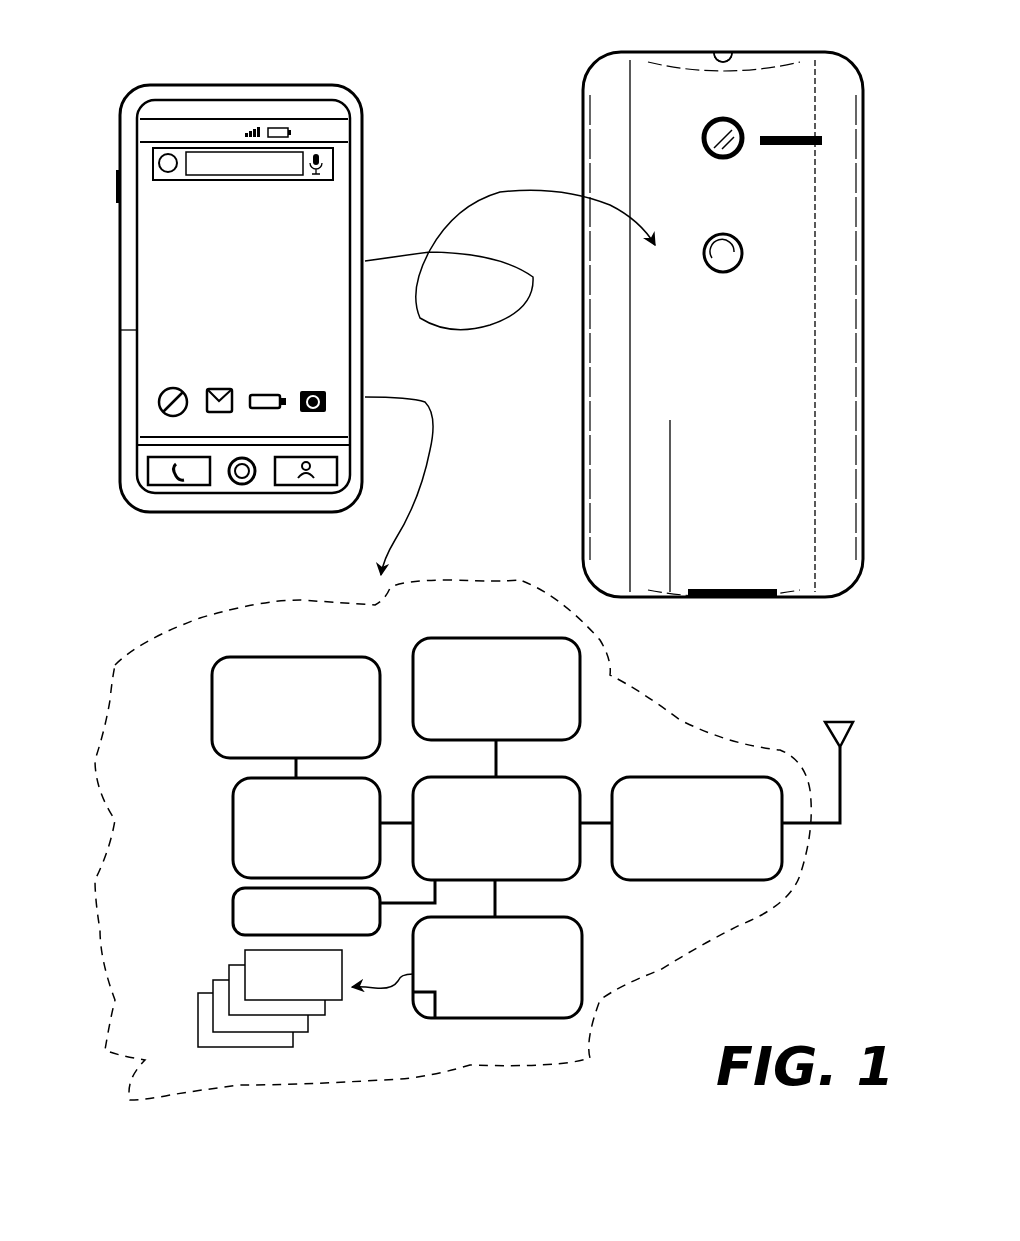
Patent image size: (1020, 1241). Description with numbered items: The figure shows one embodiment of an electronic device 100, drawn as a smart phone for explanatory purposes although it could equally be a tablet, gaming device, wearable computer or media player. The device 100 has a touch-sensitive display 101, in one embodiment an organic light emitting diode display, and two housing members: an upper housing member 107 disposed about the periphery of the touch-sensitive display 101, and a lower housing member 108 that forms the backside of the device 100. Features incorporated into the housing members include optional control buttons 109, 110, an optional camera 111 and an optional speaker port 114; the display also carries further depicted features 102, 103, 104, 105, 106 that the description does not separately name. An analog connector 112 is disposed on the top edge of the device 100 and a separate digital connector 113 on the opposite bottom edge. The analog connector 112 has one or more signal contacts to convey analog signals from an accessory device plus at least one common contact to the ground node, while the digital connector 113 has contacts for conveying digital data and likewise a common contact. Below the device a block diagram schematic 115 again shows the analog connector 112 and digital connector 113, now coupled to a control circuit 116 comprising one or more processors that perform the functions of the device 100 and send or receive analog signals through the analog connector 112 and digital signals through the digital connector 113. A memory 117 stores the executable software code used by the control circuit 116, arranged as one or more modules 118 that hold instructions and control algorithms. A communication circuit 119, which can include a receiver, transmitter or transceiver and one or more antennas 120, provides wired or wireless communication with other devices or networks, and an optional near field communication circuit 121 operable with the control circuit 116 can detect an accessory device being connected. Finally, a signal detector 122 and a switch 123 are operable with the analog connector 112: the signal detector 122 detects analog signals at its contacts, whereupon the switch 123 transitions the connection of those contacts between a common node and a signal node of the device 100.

The electronic device 100 is at (380, 165).
The touch-sensitive display 101 is at (355, 260).
The phone button 102 is at (185, 486).
The browser icon 103 is at (180, 387).
The mail icon 104 is at (227, 387).
The energy icon 105 is at (266, 392).
The camera icon 106 is at (305, 387).
The upper housing member 107 is at (128, 331).
The lower housing member 108 is at (640, 350).
The control button 109 is at (242, 486).
The control button 110 is at (723, 275).
The camera 111 is at (725, 162).
The analog connector 112 is at (722, 45).
The digital connector 113 is at (735, 600).
The speaker port 114 is at (797, 137).
The block diagram schematic 115 is at (683, 722).
The control circuit 116 is at (585, 793).
The memory 117 is at (585, 950).
The modules 118 is at (336, 1013).
The communication circuit 119 is at (690, 777).
The antenna 120 is at (838, 722).
The near field communication circuit 121 is at (232, 910).
The signal detector 122 is at (265, 839).
The switch 123 is at (265, 805).